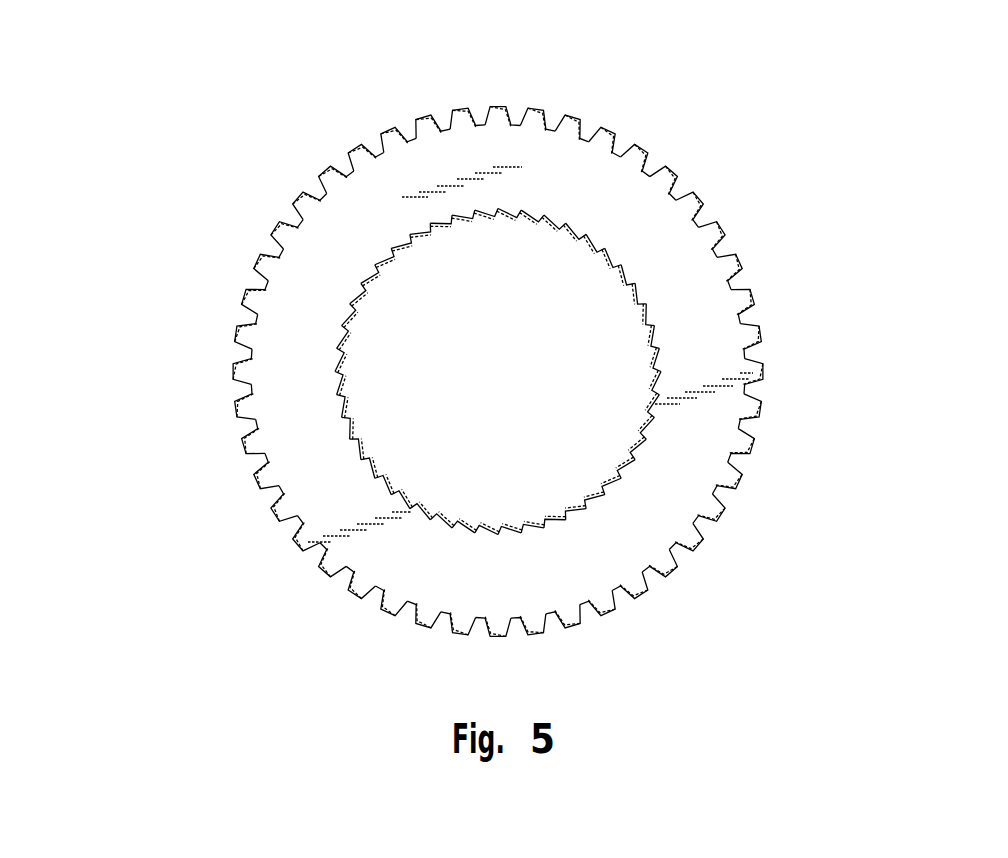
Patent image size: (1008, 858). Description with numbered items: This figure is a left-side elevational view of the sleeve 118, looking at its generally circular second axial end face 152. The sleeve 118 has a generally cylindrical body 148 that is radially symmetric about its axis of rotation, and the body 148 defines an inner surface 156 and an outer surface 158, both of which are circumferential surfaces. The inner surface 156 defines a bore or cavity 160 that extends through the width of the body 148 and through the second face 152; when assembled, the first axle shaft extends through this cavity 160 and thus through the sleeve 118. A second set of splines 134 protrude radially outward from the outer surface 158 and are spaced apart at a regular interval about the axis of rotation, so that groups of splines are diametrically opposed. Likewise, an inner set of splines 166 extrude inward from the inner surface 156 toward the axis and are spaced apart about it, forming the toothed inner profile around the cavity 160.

The sleeve 118 is at (143, 197).
The second set of splines 134 is at (235, 373).
The body 148 is at (428, 167).
The second axial end face 152 is at (574, 168).
The inner surface 156 is at (645, 300).
The outer surface 158 is at (753, 352).
The cavity 160 is at (465, 483).
The inner set of splines 166 is at (635, 450).